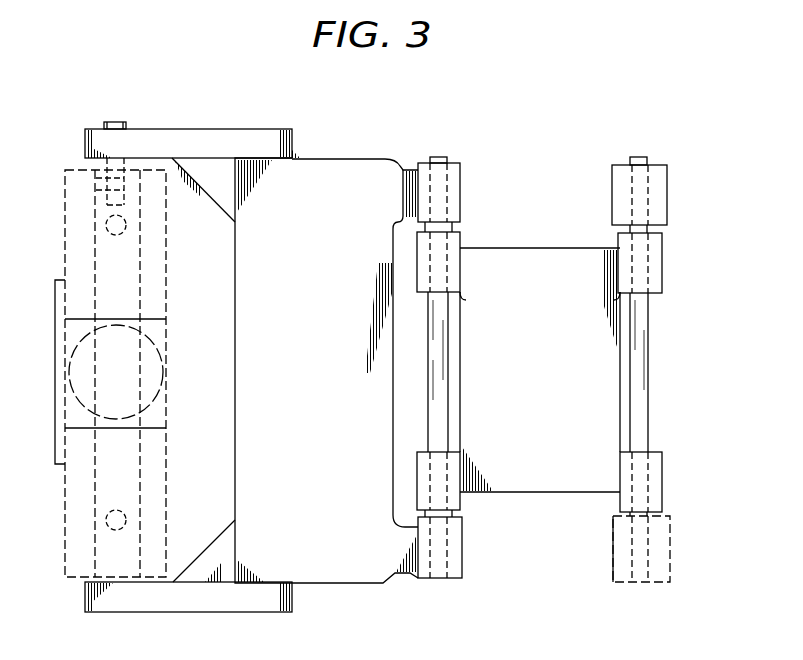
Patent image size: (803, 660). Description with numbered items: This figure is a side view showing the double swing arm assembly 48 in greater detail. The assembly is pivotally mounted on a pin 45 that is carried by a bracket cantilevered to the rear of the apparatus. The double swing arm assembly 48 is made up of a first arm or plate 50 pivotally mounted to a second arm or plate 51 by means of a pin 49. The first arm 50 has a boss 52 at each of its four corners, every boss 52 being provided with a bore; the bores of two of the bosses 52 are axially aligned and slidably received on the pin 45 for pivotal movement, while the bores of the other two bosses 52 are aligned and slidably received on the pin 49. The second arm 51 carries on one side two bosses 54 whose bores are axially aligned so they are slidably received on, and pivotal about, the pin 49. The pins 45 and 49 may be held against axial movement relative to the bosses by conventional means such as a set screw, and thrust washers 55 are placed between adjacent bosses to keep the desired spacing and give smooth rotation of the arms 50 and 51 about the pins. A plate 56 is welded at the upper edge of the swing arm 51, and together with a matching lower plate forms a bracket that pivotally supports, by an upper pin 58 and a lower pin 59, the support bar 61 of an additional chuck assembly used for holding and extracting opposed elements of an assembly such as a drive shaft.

The pin 45 is at (642, 160).
The double swing arm assembly 48 is at (416, 137).
The pin 49 is at (428, 404).
The first arm 50 is at (556, 247).
The second arm 51 is at (327, 155).
The bosses 52 is at (657, 273).
The bosses 54 is at (422, 159).
The thrust washers 55 is at (454, 230).
The plate 56 is at (243, 130).
The upper pin 58 is at (112, 122).
The lower pin 59 is at (97, 579).
The support bar 61 is at (68, 262).